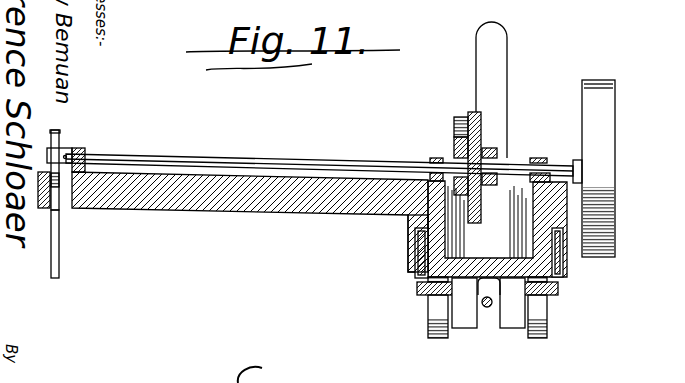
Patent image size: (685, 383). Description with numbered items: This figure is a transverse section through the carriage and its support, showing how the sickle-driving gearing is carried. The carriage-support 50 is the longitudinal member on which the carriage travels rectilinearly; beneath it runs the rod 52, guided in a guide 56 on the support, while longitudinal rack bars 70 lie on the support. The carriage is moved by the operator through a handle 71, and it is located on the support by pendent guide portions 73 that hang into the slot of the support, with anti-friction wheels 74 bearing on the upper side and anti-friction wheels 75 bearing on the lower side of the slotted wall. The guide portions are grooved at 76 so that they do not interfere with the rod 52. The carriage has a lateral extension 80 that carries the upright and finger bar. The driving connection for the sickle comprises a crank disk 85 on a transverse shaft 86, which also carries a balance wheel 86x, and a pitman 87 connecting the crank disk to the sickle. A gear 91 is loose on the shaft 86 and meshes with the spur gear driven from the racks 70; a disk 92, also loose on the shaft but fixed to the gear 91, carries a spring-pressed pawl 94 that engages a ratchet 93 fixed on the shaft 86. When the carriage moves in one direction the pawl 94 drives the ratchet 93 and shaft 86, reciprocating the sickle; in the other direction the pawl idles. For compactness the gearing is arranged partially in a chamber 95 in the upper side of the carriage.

The carriage-support 50 is at (425, 292).
The rod 52 is at (487, 313).
The guide 56 is at (489, 239).
The longitudinal rack bars 70 is at (415, 228).
The handle 71 is at (496, 52).
The pendent guide portions 73 is at (462, 330).
The anti-friction wheels 74 is at (557, 285).
The anti-friction wheels 75 is at (547, 324).
The groove 76 is at (482, 318).
The lateral extension 80 is at (268, 207).
The crank disk 85 is at (63, 135).
The transverse shaft 86 is at (224, 156).
The balance wheel 86x is at (600, 149).
The pitman 87 is at (57, 243).
The gear 91 is at (492, 153).
The disk 92 is at (481, 138).
The ratchet 93 is at (457, 150).
The spring-pressed pawl 94 is at (458, 112).
The chamber 95 is at (512, 195).